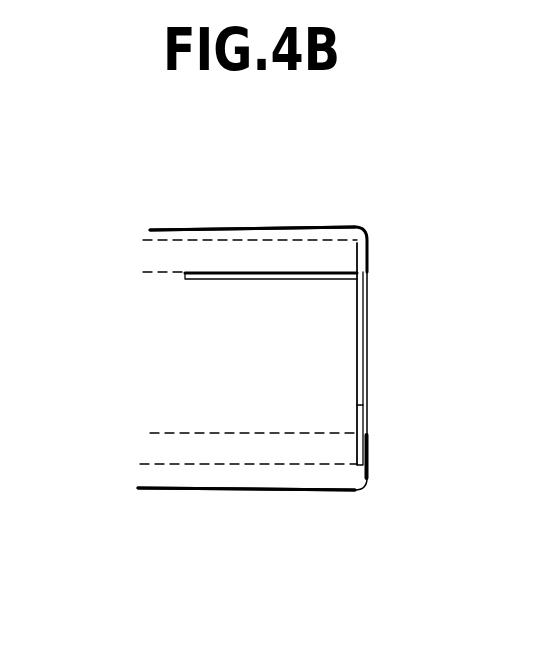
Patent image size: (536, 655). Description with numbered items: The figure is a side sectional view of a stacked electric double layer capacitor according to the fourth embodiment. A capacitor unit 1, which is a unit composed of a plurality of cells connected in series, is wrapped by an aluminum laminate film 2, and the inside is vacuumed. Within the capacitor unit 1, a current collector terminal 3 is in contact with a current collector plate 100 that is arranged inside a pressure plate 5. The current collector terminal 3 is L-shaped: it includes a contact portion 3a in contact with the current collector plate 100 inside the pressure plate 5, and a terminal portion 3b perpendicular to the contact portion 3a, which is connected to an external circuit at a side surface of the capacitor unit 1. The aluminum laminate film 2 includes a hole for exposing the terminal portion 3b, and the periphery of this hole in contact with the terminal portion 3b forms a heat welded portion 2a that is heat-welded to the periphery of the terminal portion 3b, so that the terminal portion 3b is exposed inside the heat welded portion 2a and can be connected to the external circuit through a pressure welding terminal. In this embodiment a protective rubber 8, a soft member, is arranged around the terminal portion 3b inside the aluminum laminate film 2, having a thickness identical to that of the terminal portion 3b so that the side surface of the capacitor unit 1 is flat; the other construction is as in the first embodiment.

The capacitor unit 1 is at (123, 235).
The aluminum laminate film 2 is at (312, 226).
The heat welded portion 2a is at (368, 455).
The current collector terminal 3 is at (274, 415).
The contact portion 3a is at (240, 280).
The terminal portion 3b is at (356, 313).
The pressure plate 5 is at (168, 256).
The protective rubber 8 is at (365, 420).
The current collector plate 100 is at (190, 433).